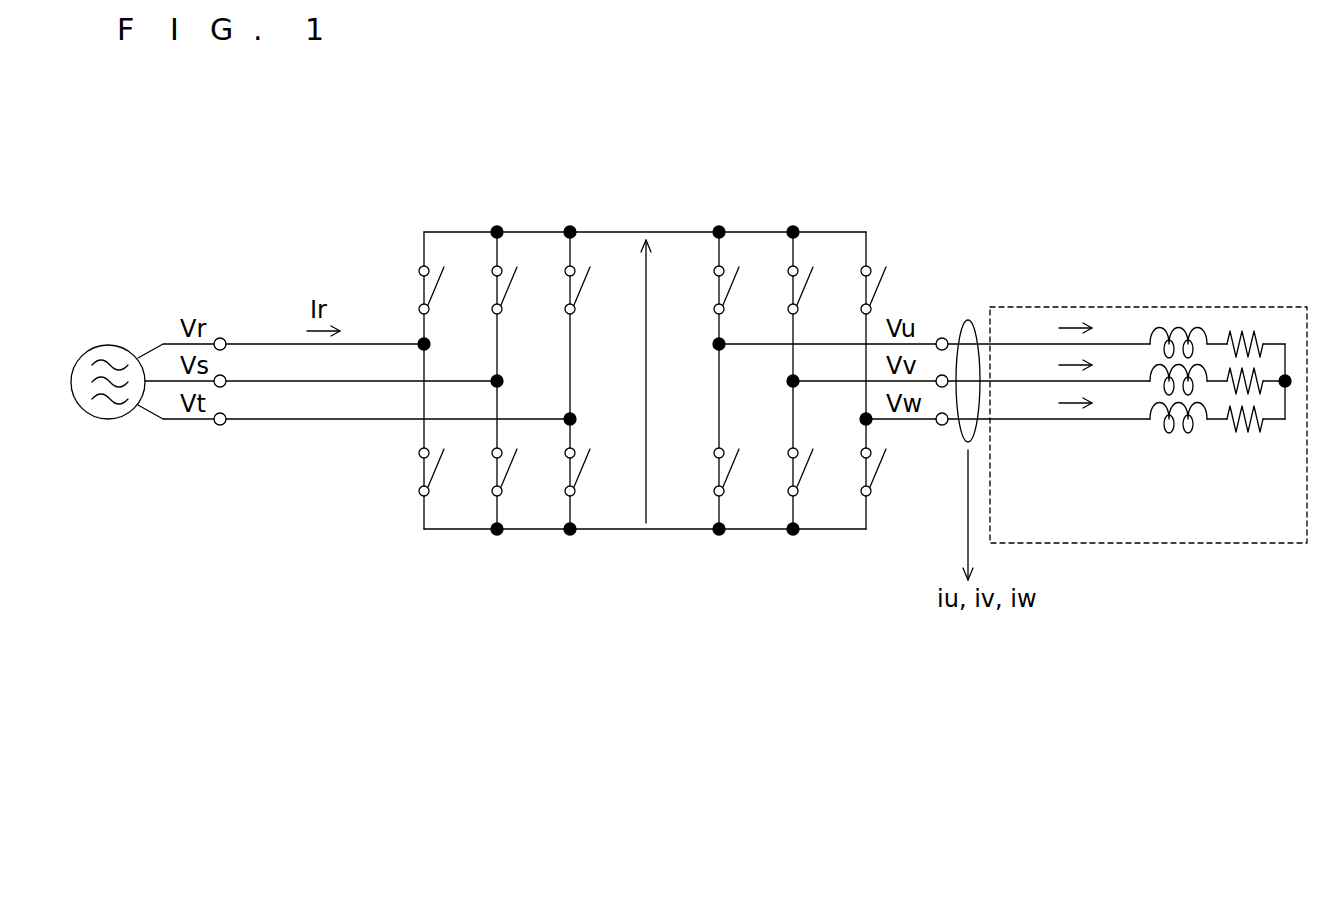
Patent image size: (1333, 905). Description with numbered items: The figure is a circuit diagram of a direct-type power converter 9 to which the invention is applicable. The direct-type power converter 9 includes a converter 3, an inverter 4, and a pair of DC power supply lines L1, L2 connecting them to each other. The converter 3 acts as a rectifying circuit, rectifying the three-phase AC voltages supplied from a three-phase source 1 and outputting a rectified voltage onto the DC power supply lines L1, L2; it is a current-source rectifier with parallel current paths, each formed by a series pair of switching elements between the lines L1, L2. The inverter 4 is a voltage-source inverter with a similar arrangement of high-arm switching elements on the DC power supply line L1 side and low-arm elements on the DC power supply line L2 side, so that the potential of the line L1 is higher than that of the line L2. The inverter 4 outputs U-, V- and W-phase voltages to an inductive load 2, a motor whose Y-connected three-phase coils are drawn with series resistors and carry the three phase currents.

The AC power source 1 is at (108, 345).
The load 2 is at (1208, 307).
The converter 3 is at (584, 213).
The inverter 4 is at (872, 213).
The direct-type power converter 9 is at (808, 112).
The DC power supply line L1 is at (615, 232).
The DC power supply line L2 is at (600, 531).